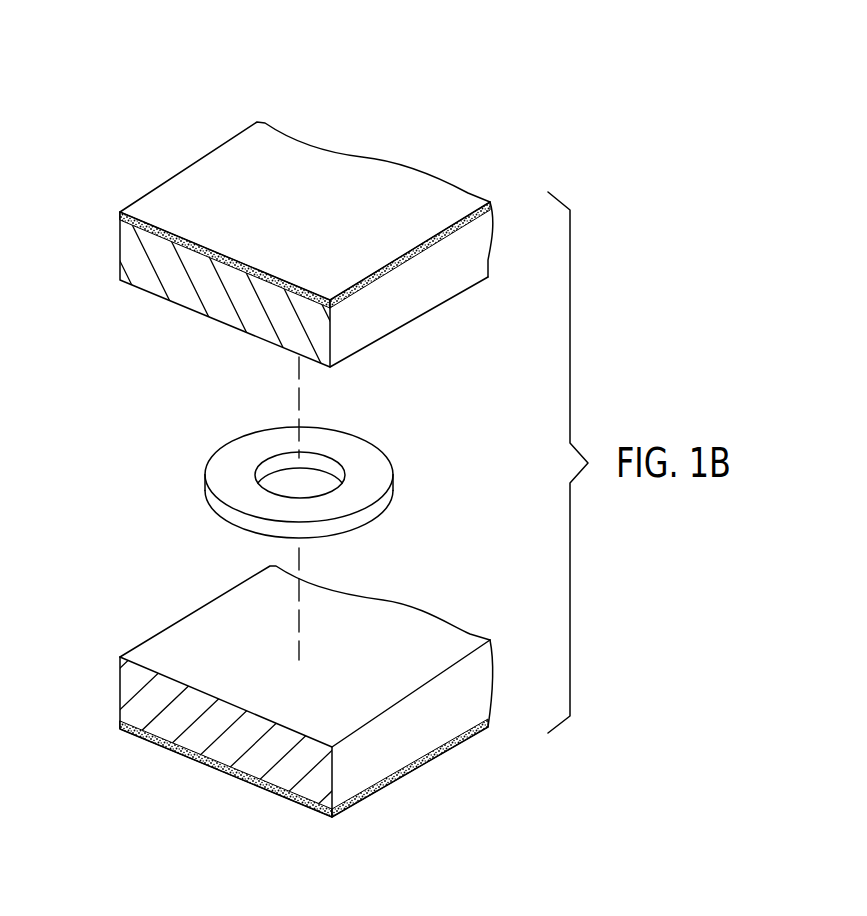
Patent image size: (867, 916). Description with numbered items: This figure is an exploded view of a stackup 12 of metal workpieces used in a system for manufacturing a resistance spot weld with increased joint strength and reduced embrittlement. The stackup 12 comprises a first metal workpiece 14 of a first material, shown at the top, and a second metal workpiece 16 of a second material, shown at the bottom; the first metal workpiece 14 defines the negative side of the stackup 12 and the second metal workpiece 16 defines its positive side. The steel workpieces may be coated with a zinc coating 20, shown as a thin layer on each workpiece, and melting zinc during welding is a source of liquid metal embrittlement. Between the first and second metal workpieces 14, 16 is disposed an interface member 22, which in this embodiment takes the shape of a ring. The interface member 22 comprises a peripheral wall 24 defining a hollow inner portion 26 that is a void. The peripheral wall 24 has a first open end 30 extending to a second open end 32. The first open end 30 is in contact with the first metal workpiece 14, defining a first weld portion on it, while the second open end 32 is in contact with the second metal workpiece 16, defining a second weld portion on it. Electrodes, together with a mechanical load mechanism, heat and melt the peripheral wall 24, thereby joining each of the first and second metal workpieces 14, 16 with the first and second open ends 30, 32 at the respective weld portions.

The stackup 12 is at (148, 120).
The first metal workpiece 14 is at (132, 252).
The second metal workpiece 16 is at (133, 695).
The zinc coating 20 is at (120, 212).
The interface member 22 is at (250, 487).
The peripheral wall 24 is at (207, 486).
The hollow inner portion 26 is at (285, 480).
The first open end 30 is at (357, 458).
The second open end 32 is at (360, 525).